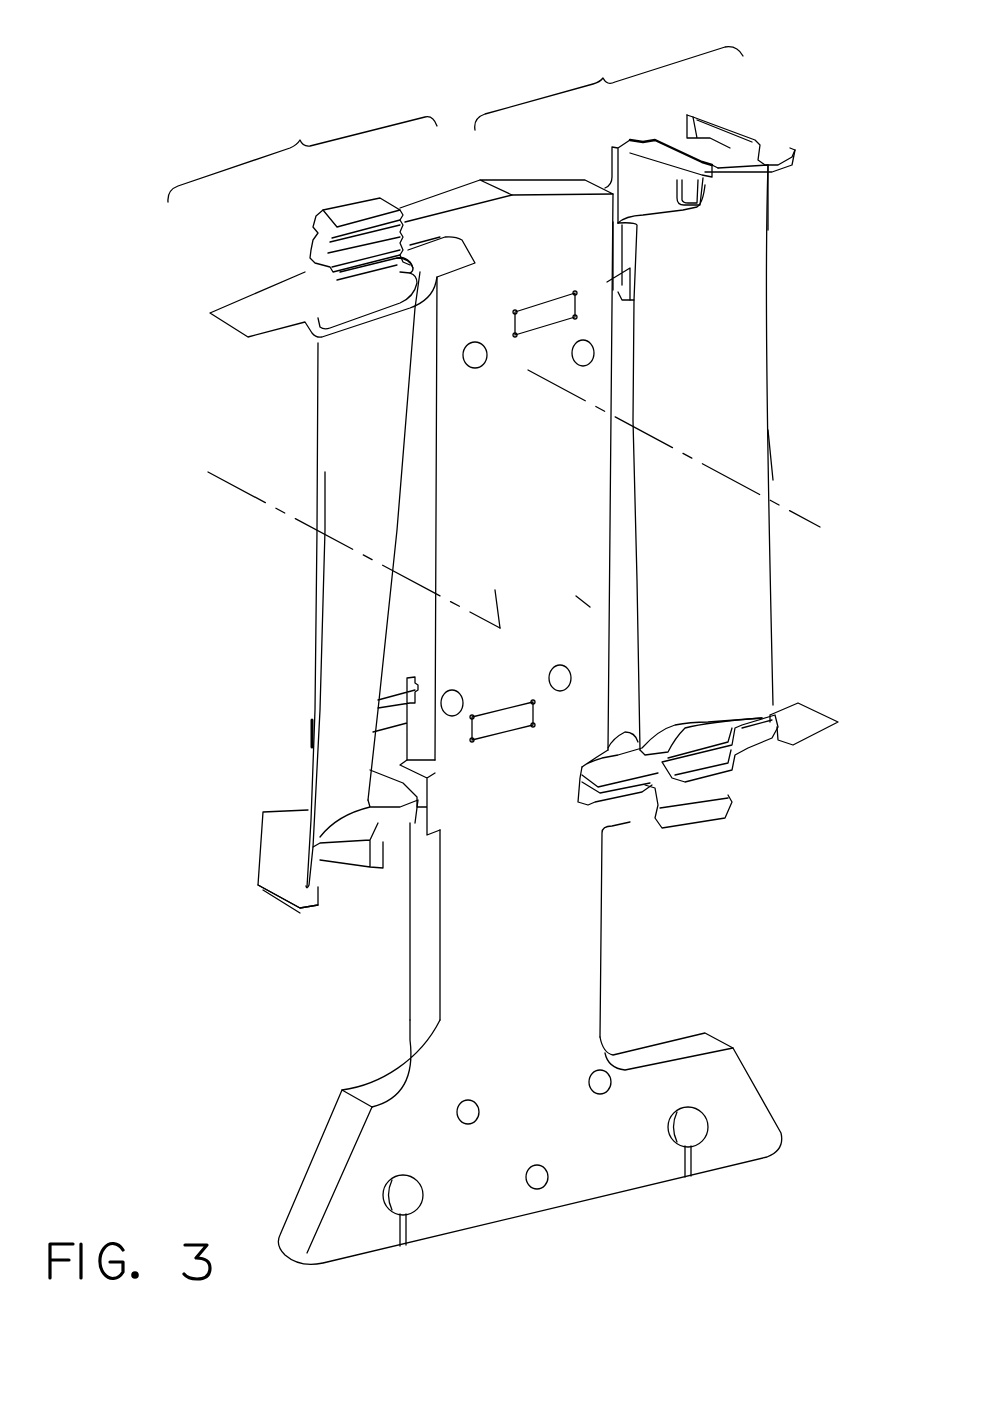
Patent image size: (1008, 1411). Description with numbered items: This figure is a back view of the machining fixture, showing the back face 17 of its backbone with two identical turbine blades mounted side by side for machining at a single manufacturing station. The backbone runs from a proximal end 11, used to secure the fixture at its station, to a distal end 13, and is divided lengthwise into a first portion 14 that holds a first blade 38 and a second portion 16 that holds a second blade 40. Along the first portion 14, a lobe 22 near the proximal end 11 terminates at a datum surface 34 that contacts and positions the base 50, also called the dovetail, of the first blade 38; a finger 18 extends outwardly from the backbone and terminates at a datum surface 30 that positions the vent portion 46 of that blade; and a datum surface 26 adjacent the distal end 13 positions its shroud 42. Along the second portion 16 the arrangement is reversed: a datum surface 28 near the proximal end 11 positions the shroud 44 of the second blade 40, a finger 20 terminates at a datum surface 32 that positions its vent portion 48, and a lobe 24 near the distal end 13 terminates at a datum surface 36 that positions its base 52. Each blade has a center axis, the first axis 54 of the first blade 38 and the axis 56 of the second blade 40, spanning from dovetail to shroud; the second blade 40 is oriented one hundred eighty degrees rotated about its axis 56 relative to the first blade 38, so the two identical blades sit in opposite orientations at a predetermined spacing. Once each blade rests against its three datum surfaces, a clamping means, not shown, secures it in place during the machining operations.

The proximal end 11 is at (613, 1197).
The distal end 13 is at (530, 178).
The first portion 14 is at (603, 78).
The second portion 16 is at (298, 141).
The back face 17 is at (572, 593).
The finger 18 is at (620, 285).
The finger 20 is at (403, 672).
The lobe 22 is at (630, 822).
The lobe 24 is at (440, 187).
The datum surface 26 is at (630, 150).
The datum surface 28 is at (407, 793).
The datum surface 30 is at (637, 268).
The datum surface 32 is at (310, 727).
The datum surface 34 is at (668, 802).
The datum surface 36 is at (413, 217).
The first blade 38 is at (768, 455).
The second blade 40 is at (318, 613).
The shroud 42 is at (743, 138).
The shroud 44 is at (320, 887).
The vent portion 46 is at (763, 300).
The vent portion 48 is at (318, 551).
The base 50 is at (735, 812).
The base 52 is at (303, 248).
The first axis 54 is at (790, 508).
The axis 56 is at (495, 590).